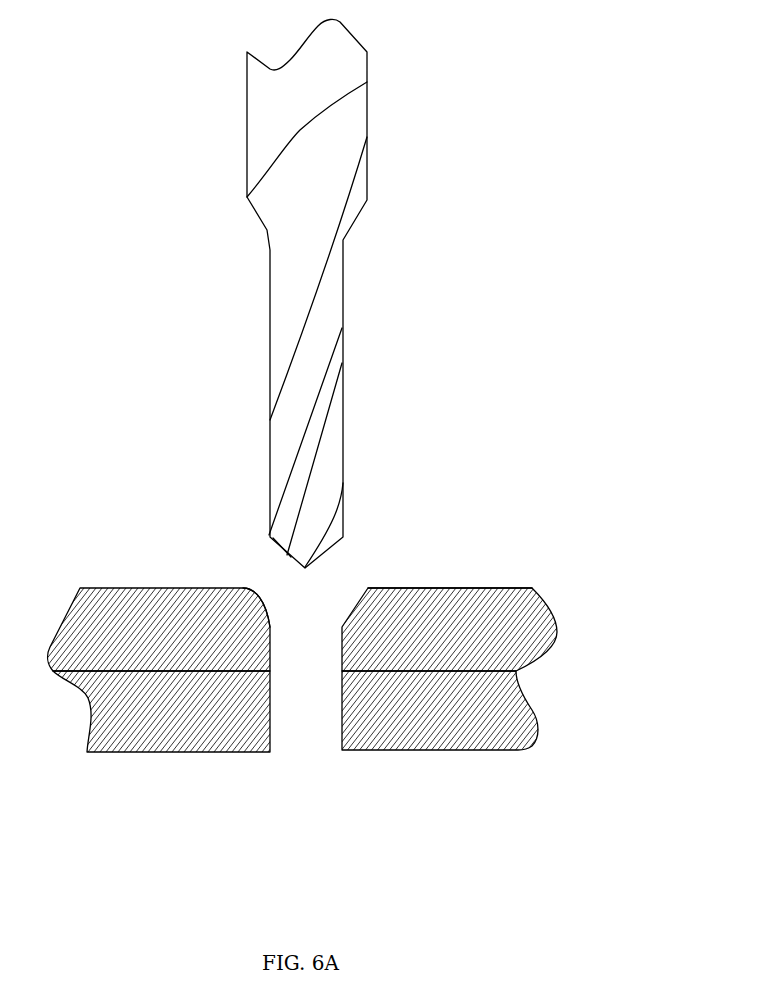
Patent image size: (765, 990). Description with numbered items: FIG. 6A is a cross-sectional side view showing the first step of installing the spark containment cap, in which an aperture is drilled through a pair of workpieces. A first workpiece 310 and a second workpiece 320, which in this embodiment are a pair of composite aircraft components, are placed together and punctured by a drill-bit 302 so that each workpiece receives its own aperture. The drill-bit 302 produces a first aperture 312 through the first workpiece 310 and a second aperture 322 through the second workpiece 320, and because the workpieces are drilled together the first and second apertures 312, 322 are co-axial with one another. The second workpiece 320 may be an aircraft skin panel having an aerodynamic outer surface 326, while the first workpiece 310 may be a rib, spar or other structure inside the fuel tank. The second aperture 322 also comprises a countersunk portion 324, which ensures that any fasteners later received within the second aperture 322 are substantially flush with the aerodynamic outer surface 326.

The drill-bit 302 is at (369, 153).
The first workpiece 310 is at (538, 722).
The first aperture 312 is at (322, 718).
The second workpiece 320 is at (558, 633).
The second aperture 322 is at (322, 656).
The countersunk portion 324 is at (249, 592).
The aerodynamic outer surface 326 is at (475, 588).